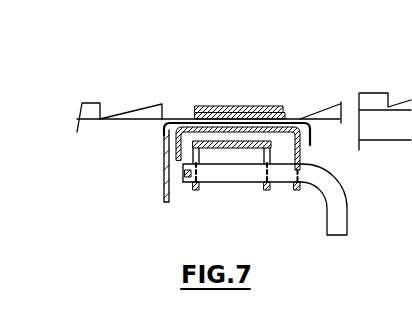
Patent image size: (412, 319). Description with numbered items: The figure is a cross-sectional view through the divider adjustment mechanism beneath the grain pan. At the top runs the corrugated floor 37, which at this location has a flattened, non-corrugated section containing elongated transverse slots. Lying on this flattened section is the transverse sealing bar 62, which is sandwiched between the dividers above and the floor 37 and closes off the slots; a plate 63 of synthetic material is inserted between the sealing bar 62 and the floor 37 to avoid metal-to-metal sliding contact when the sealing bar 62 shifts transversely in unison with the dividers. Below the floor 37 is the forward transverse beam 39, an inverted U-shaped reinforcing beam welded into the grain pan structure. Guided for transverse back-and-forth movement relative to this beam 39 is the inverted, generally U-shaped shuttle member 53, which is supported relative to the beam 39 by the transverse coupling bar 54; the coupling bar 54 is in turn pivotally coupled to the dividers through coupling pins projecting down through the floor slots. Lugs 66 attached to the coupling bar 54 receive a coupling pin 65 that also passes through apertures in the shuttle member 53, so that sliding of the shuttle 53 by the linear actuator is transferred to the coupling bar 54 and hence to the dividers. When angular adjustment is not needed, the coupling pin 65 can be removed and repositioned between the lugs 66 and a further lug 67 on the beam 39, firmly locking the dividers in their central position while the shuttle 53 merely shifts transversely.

The corrugated floor 37 is at (330, 109).
The forward transverse beam 39 is at (165, 128).
The shuttle member 53 is at (178, 146).
The transverse coupling bar 54 is at (234, 148).
The transverse sealing bar 62 is at (193, 111).
The plate of synthetic material 63 is at (189, 117).
The coupling pin 65 is at (348, 218).
The lugs 66 is at (197, 184).
The further lug 67 is at (167, 204).